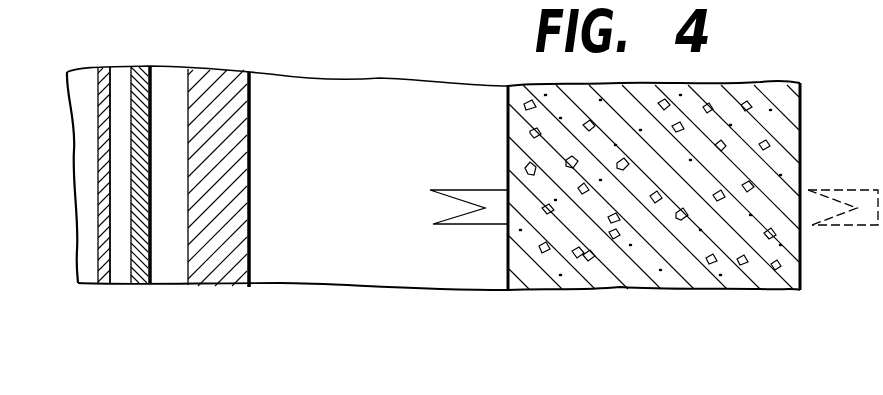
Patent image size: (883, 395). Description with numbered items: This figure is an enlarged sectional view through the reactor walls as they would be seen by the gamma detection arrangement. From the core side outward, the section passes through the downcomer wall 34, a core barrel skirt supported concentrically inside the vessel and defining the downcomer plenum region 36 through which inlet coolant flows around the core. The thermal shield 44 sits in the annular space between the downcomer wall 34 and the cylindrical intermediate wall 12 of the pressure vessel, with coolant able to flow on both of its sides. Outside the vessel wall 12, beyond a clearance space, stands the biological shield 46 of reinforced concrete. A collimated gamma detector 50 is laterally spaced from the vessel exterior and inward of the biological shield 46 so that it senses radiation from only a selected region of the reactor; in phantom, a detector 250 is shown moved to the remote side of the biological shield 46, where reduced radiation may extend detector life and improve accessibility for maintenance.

The cylindrical intermediate wall 12 is at (223, 199).
The downcomer wall 34 is at (103, 127).
The downcomer plenum region 36 is at (120, 82).
The thermal shield 44 is at (138, 163).
The biological shield 46 is at (543, 120).
The gamma detector 50 is at (481, 227).
The remotely placed detector 250 is at (858, 205).